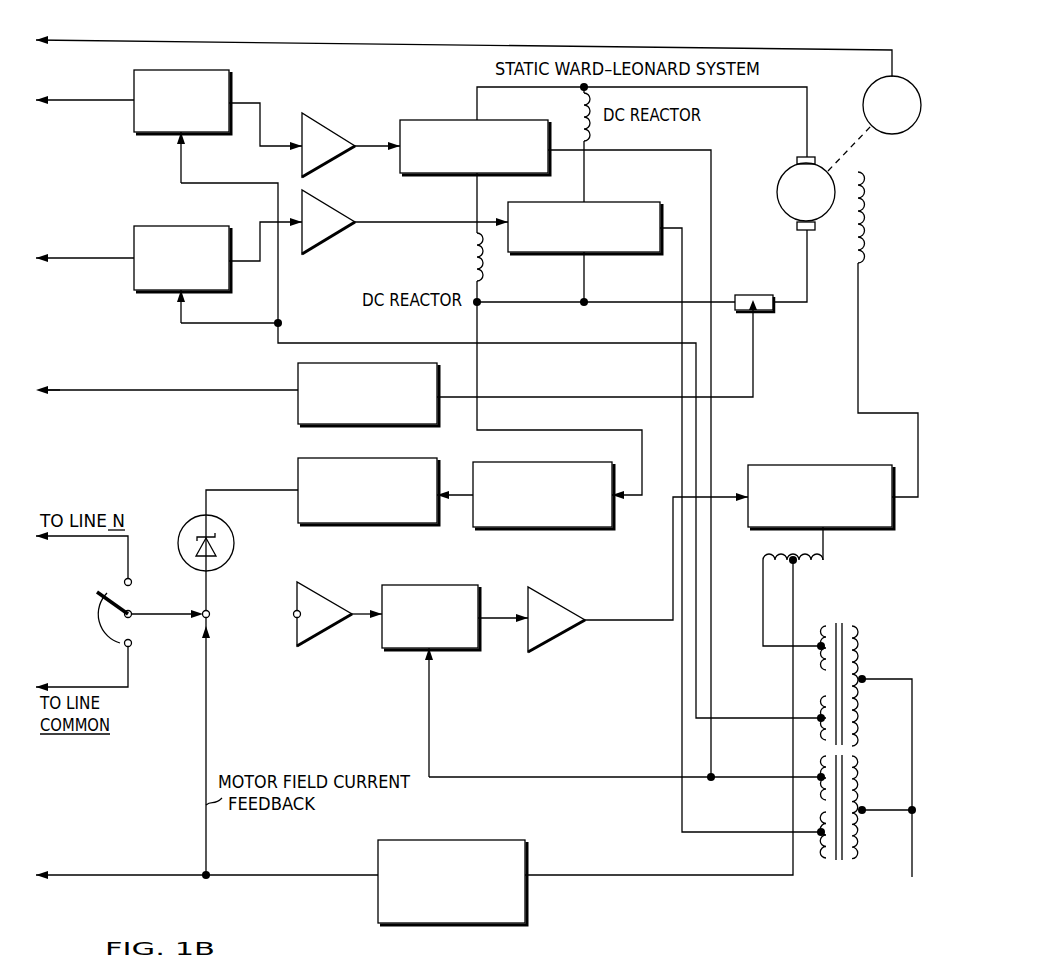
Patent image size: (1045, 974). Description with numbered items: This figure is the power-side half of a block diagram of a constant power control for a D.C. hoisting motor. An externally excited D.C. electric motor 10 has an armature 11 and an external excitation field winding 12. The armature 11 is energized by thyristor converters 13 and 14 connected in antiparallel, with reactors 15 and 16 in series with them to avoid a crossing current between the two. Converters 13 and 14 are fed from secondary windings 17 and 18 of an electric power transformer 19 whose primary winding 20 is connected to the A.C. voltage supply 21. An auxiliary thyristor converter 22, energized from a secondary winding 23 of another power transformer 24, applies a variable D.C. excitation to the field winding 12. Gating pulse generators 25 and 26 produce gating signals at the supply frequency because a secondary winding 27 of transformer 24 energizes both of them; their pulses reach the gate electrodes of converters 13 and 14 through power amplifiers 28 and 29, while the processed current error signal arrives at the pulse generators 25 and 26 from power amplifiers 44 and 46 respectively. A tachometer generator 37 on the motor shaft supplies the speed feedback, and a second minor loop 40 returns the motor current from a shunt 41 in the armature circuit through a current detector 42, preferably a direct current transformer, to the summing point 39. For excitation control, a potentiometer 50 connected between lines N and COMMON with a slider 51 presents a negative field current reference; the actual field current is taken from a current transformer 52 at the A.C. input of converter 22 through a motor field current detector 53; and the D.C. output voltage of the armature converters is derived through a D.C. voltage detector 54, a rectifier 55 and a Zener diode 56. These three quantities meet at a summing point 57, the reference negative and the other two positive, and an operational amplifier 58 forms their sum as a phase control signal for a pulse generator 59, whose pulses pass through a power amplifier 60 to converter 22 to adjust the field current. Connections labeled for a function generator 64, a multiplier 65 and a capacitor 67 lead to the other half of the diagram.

The externally excited D.C. electric motor 10 is at (842, 136).
The armature 11 is at (832, 200).
The external excitation field winding 12 is at (884, 176).
The thyristor converter 13 is at (460, 118).
The thyristor converter 14 is at (639, 200).
The reactor 15 is at (476, 238).
The reactor 16 is at (584, 100).
The secondary winding 17 is at (820, 770).
The secondary winding 18 is at (820, 826).
The electric power transformer 19 is at (839, 862).
The primary winding 20 is at (864, 800).
The A.C. voltage supply 21 is at (912, 850).
The auxiliary thyristor converter 22 is at (793, 464).
The secondary winding 23 is at (822, 638).
The power transformer 24 is at (852, 628).
The gating pulse generator 25 is at (230, 73).
The gating pulse generator 26 is at (213, 210).
The secondary winding 27 is at (822, 710).
The power amplifier 28 is at (400, 104).
The power amplifier 29 is at (413, 282).
The tachometer generator 37 is at (868, 94).
The summing point 39 is at (228, 418).
The second minor loop 40 is at (258, 392).
The shunt 41 is at (752, 280).
The current detector 42 is at (296, 372).
The power amplifier 44 is at (125, 95).
The power amplifier 46 is at (125, 253).
The potentiometer 50 is at (124, 582).
The slider 51 is at (98, 590).
The current transformer 52 is at (800, 566).
The motor field current detector 53 is at (527, 838).
The D.C. voltage detector 54 is at (565, 462).
The rectifier 55 is at (450, 446).
The Zener diode 56 is at (185, 522).
The summing point 57 is at (203, 612).
The operational amplifier 58 is at (298, 600).
The pulse generator 59 is at (440, 576).
The power amplifier 60 is at (566, 604).
The function generator 64 is at (165, 864).
The multiplier 65 is at (203, 383).
The capacitor 67 is at (200, 32).